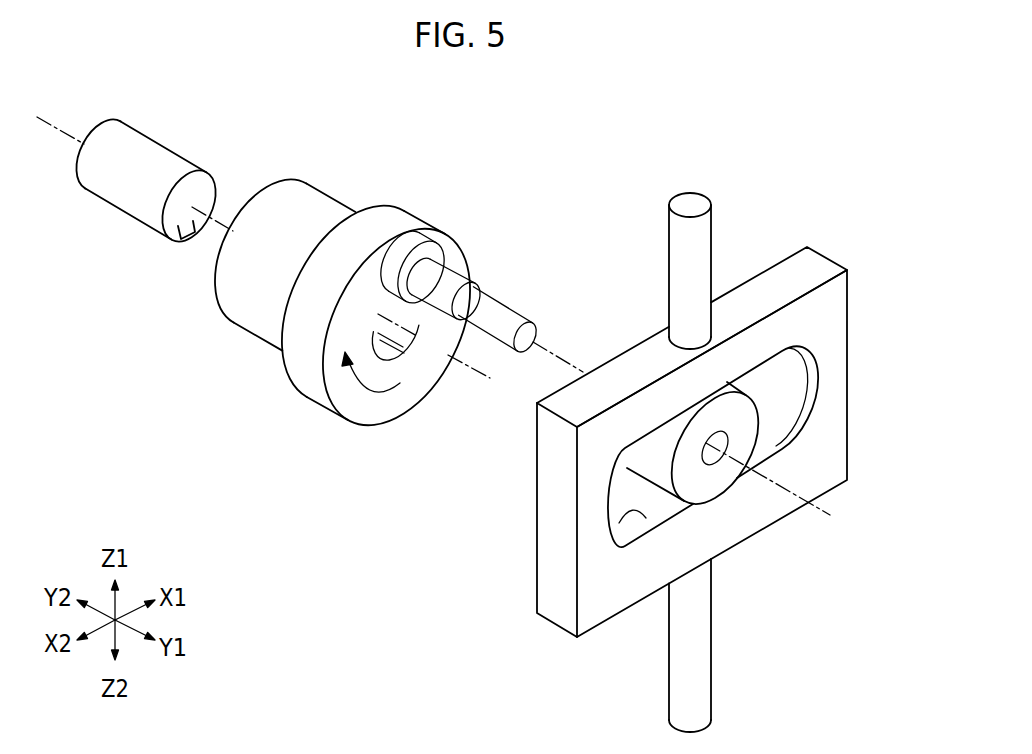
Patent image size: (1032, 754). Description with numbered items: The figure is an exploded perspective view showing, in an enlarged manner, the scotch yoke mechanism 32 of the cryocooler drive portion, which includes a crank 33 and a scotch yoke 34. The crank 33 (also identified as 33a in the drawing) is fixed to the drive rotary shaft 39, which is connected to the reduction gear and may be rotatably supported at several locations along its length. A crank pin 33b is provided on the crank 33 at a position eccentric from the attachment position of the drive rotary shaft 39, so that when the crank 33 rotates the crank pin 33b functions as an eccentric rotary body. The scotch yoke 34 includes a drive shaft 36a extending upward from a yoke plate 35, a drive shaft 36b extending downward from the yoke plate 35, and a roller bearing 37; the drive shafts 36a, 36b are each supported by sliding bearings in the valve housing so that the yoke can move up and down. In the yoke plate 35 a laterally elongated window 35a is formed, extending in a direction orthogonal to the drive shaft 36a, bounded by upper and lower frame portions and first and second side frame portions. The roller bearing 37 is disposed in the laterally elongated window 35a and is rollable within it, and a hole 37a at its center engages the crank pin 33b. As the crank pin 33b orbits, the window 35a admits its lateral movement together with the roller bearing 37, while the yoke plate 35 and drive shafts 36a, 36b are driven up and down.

The scotch yoke mechanism 32 is at (830, 90).
The crank 33 is at (522, 328).
The cam body 33a is at (325, 195).
The crank pin 33b is at (497, 313).
The scotch yoke 34 is at (856, 251).
The yoke plate 35 is at (557, 480).
The laterally elongated window 35a is at (620, 518).
The drive shaft 36a is at (700, 238).
The drive shaft 36b is at (697, 663).
The roller bearing 37 is at (743, 437).
The hole 37a is at (718, 456).
The drive rotary shaft 39 is at (148, 152).